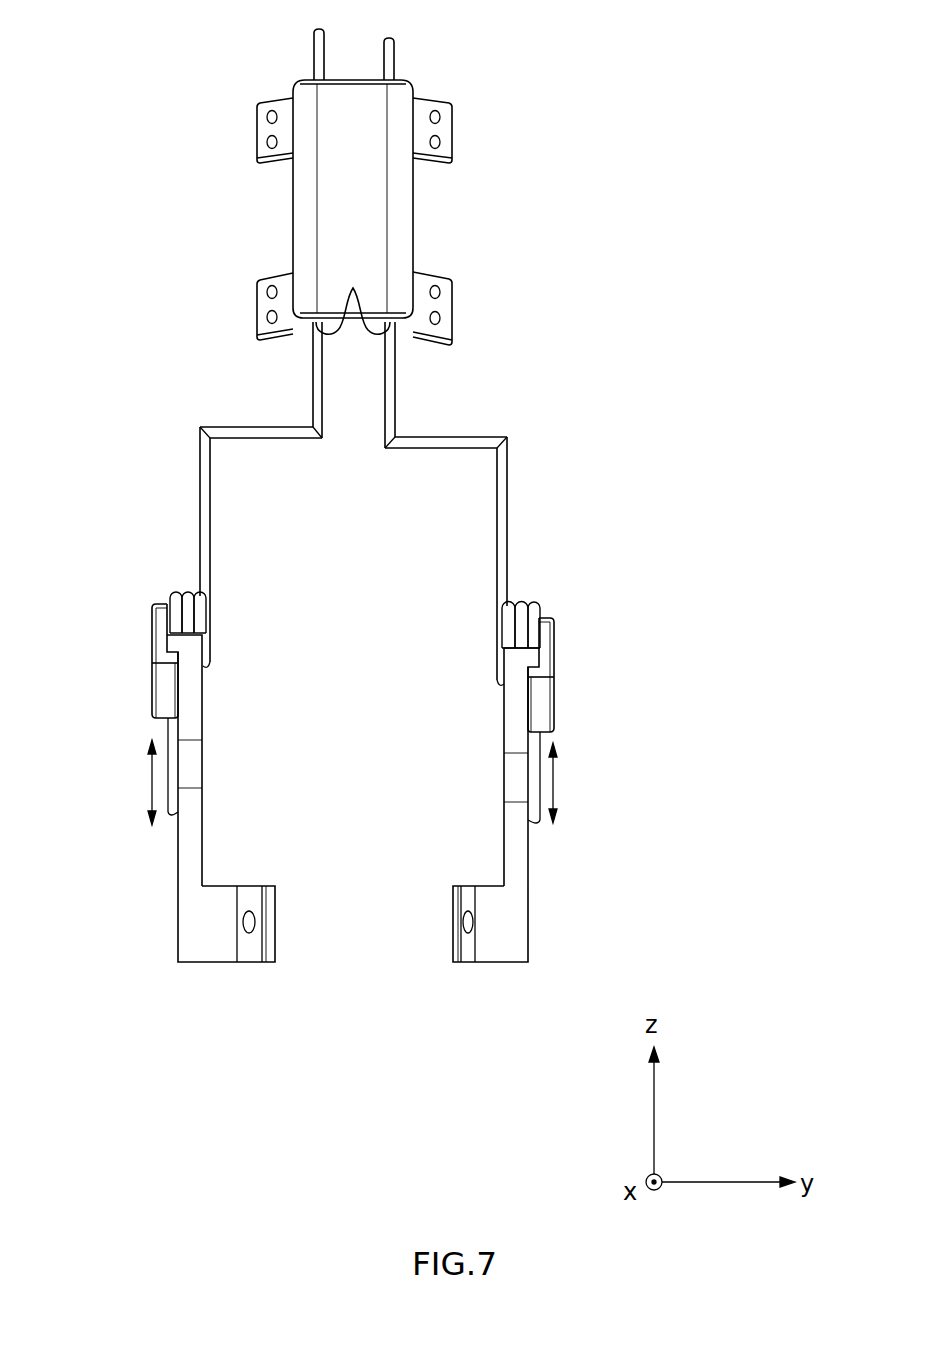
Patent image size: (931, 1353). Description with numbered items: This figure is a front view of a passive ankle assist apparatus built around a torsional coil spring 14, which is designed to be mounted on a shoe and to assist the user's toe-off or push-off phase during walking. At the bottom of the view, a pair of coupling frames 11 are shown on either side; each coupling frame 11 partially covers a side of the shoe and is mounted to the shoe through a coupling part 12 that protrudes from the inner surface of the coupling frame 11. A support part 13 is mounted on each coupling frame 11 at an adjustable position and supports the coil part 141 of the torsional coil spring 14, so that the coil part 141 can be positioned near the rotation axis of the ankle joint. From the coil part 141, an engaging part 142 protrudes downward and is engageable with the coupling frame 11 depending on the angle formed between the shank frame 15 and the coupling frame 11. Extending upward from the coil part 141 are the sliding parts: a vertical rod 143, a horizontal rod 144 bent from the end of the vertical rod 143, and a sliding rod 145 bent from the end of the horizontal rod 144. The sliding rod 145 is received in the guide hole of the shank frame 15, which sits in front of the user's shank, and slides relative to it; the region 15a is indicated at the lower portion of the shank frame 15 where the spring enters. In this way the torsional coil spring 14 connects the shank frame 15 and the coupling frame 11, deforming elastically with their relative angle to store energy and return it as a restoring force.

The coupling frame 11 is at (190, 858).
The coupling part 12 is at (243, 950).
The support part 13 is at (158, 682).
The torsional coil spring 14 is at (351, 503).
The shank frame 15 is at (363, 221).
The connecting portion 15a is at (353, 296).
The coil part 141 is at (176, 598).
The engaging part 142 is at (172, 778).
The vertical rod 143 is at (205, 496).
The horizontal rod 144 is at (264, 432).
The sliding rod 145 is at (316, 365).